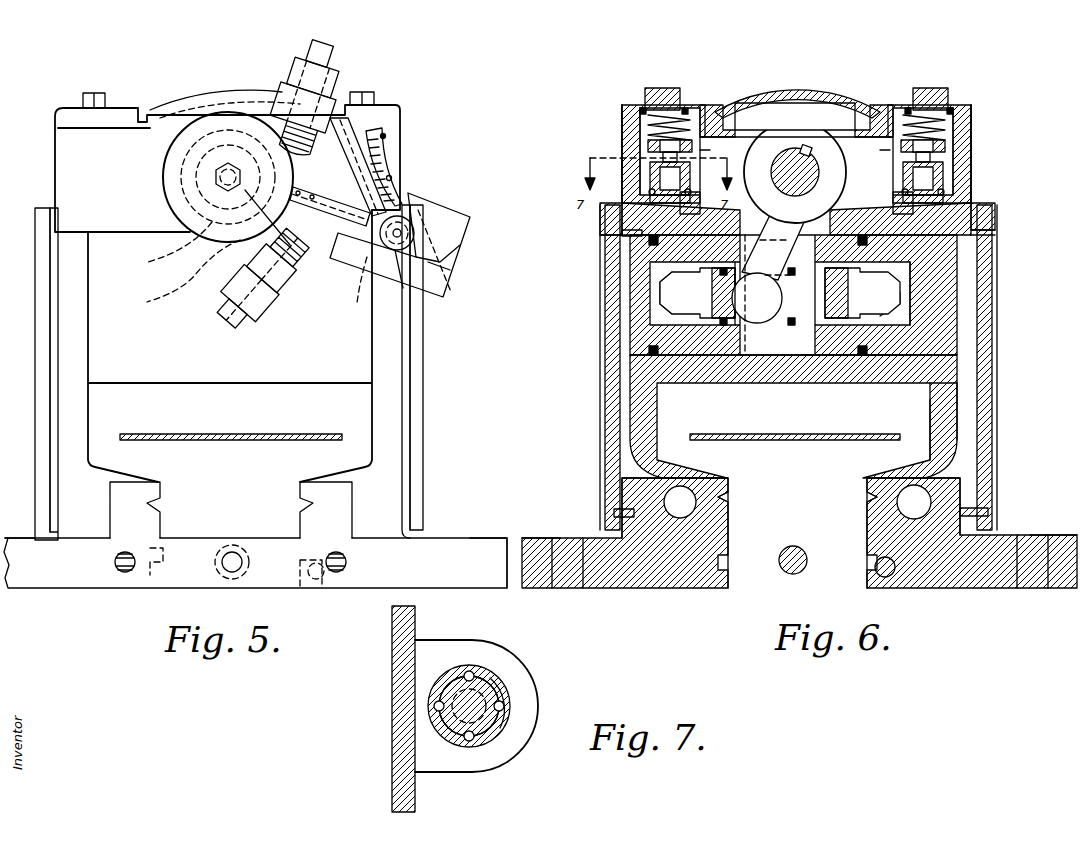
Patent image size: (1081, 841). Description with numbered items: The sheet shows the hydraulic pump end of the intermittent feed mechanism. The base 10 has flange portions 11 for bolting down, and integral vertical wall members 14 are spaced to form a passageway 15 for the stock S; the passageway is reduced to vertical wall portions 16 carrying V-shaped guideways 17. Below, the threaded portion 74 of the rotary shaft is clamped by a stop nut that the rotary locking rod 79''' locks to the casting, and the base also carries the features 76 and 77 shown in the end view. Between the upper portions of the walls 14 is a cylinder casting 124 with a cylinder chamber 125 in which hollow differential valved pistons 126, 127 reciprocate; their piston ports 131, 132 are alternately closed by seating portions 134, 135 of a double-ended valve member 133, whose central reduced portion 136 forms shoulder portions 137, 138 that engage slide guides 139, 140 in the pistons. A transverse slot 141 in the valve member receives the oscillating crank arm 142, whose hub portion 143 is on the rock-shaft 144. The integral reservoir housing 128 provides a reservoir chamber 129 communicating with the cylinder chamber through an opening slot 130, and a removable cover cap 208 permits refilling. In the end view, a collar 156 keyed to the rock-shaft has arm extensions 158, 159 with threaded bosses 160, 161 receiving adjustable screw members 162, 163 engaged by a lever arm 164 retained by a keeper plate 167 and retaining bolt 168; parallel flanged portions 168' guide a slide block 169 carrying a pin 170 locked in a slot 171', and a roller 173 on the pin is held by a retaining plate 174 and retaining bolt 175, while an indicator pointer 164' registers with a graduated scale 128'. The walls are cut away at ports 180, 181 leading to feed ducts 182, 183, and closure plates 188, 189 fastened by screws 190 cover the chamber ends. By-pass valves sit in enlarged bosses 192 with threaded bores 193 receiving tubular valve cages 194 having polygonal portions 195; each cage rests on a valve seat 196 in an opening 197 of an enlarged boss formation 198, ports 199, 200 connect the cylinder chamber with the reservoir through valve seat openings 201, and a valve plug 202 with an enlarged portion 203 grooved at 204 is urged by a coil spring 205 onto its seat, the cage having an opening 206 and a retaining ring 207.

In FIG. 5, the base 10 is at (85, 580).
In FIG. 6, the base 10 is at (698, 585).
In FIG. 5, the flange portions 11 is at (22, 545).
In FIG. 6, the flange portions 11 is at (532, 545).
In FIG. 5, the vertical wall members 14 is at (45, 442).
In FIG. 6, the vertical wall members 14 is at (630, 425).
In FIG. 5, the passageway 15 is at (90, 408).
In FIG. 6, the passageway 15 is at (935, 436).
In FIG. 6, the vertical wall portions 16 is at (729, 537).
In FIG. 5, the V-shaped guideways 17 is at (160, 505).
In FIG. 6, the V-shaped guideways 17 is at (729, 497).
In FIG. 5, the threaded portion of rotary shaft 74 is at (249, 545).
In FIG. 6, the threaded portion of rotary shaft 74 is at (786, 575).
In FIG. 5, the recess 76 is at (190, 582).
In FIG. 5, the screw 77 is at (125, 575).
In FIG. 5, the rotary locking rod 79''' is at (311, 595).
In FIG. 6, the rotary locking rod 79''' is at (888, 584).
In FIG. 6, the cylinder casting 124 is at (828, 360).
In FIG. 6, the cylinder chamber 125 is at (942, 372).
In FIG. 6, the piston 126 is at (703, 345).
In FIG. 6, the piston 127 is at (815, 360).
In FIG. 5, the reservoir housing 128 is at (206, 168).
In FIG. 6, the reservoir housing 128 is at (840, 154).
In FIG. 7, the reservoir housing 128 is at (381, 709).
In FIG. 5, the graduated scale 128' is at (415, 166).
In FIG. 6, the reservoir chamber 129 is at (848, 150).
In FIG. 6, the opening slot 130 is at (835, 212).
In FIG. 6, the piston port 131 is at (642, 286).
In FIG. 6, the piston port 132 is at (880, 283).
In FIG. 6, the double-ended valve member 133 is at (785, 360).
In FIG. 6, the seating portion 134 is at (660, 310).
In FIG. 6, the seating portion 135 is at (866, 300).
In FIG. 6, the central reduced portion 136 is at (735, 360).
In FIG. 6, the enlarged shoulder portion 137 is at (697, 293).
In FIG. 6, the enlarged shoulder portion 138 is at (856, 293).
In FIG. 6, the slide guide 139 is at (720, 360).
In FIG. 6, the slide guide 140 is at (772, 380).
In FIG. 6, the transverse slot 141 is at (748, 380).
In FIG. 6, the oscillating crank arm 142 is at (752, 262).
In FIG. 6, the hub portion 143 is at (806, 112).
In FIG. 5, the rock-shaft 144 is at (172, 242).
In FIG. 6, the rock-shaft 144 is at (779, 147).
In FIG. 5, the collar 156 is at (186, 273).
In FIG. 5, the arm extension 158 is at (255, 101).
In FIG. 5, the arm extension 159 is at (230, 270).
In FIG. 5, the threaded boss 160 is at (335, 82).
In FIG. 5, the threaded boss 161 is at (279, 300).
In FIG. 5, the adjustable screw member 162 is at (291, 270).
In FIG. 5, the adjustable screw member 163 is at (358, 167).
In FIG. 5, the lever arm 164 is at (330, 213).
In FIG. 5, the indicator pointer 164' is at (357, 167).
In FIG. 5, the keeper plate 167 is at (170, 185).
In FIG. 5, the retaining bolt 168 is at (208, 177).
In FIG. 5, the parallel flanged portions 168' is at (407, 243).
In FIG. 5, the slide block 169 is at (440, 228).
In FIG. 5, the pin 170 is at (355, 288).
In FIG. 5, the slot 171' is at (467, 251).
In FIG. 5, the roller 173 is at (410, 218).
In FIG. 5, the retaining plate 174 is at (452, 252).
In FIG. 5, the retaining bolt 175 is at (394, 266).
In FIG. 6, the port 180 is at (630, 405).
In FIG. 6, the port 181 is at (968, 415).
In FIG. 6, the feed duct 182 is at (686, 494).
In FIG. 6, the feed duct 183 is at (912, 494).
In FIG. 5, the closure plate 188 is at (45, 398).
In FIG. 6, the closure plate 188 is at (605, 370).
In FIG. 5, the closure plate 189 is at (418, 378).
In FIG. 6, the closure plate 189 is at (993, 342).
In FIG. 6, the screws 190 is at (612, 516).
In FIG. 6, the enlarged bosses 192 is at (623, 110).
In FIG. 6, the threaded bores 193 is at (622, 126).
In FIG. 6, the tubular valve cages 194 is at (648, 146).
In FIG. 7, the tubular valve cages 194 is at (498, 672).
In FIG. 5, the polygonal portions 195 is at (88, 100).
In FIG. 6, the polygonal portions 195 is at (660, 88).
In FIG. 6, the valve seats 196 is at (608, 218).
In FIG. 6, the openings 197 is at (622, 235).
In FIG. 6, the enlarged boss formations 198 is at (718, 208).
In FIG. 7, the enlarged boss formations 198 is at (475, 645).
In FIG. 6, the port 199 is at (632, 250).
In FIG. 6, the port 200 is at (980, 228).
In FIG. 6, the valve seat openings 201 is at (700, 212).
In FIG. 6, the valve plug 202 is at (648, 192).
In FIG. 6, the enlarged portion 203 is at (692, 178).
In FIG. 7, the enlarged portion 203 is at (505, 692).
In FIG. 6, the longitudinally extending grooves 204 is at (660, 157).
In FIG. 7, the longitudinally extending grooves 204 is at (510, 706).
In FIG. 6, the coil springs 205 is at (686, 106).
In FIG. 6, the opening 206 is at (668, 155).
In FIG. 7, the opening 206 is at (518, 730).
In FIG. 6, the retaining rings 207 is at (640, 175).
In FIG. 5, the removable cover cap 208 is at (200, 88).
In FIG. 6, the removable cover cap 208 is at (745, 106).
In FIG. 5, the stock S is at (212, 440).
In FIG. 6, the stock S is at (803, 436).